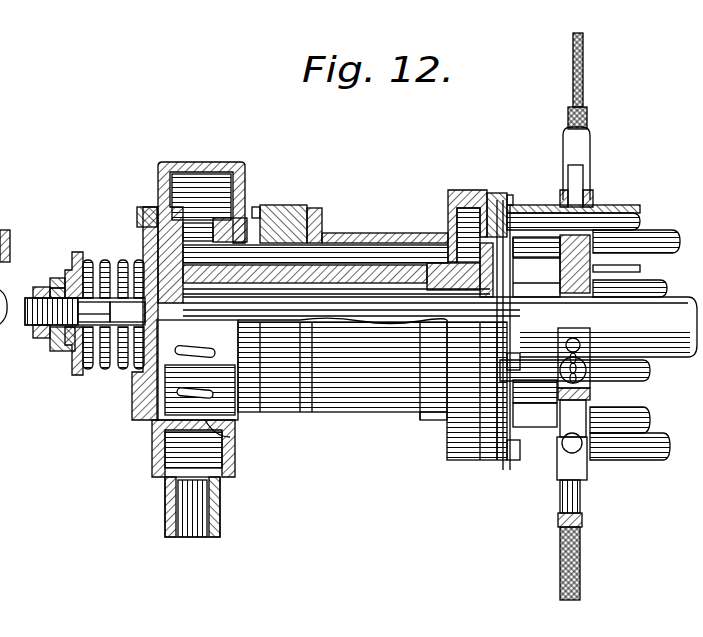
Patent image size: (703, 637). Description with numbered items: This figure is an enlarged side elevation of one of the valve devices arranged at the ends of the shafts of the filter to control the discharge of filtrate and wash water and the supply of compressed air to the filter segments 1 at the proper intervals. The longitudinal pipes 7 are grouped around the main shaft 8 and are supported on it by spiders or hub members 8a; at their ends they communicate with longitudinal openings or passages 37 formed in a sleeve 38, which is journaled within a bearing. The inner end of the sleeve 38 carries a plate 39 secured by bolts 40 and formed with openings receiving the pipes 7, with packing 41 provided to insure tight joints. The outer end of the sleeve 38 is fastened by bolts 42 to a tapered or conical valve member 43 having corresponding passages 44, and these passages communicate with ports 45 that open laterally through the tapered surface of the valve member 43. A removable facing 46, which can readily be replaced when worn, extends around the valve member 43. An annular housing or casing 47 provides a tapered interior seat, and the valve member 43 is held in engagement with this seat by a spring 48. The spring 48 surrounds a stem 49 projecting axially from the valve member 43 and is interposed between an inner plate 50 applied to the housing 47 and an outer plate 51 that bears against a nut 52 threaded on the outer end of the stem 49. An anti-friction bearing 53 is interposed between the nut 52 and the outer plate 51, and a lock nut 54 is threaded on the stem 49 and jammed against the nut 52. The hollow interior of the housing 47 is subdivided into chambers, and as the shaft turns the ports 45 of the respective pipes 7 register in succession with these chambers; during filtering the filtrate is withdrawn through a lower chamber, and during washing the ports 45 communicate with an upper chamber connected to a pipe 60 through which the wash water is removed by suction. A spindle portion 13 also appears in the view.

The segment 1 is at (573, 78).
The longitudinal pipe 7 is at (604, 206).
The main shaft 8 is at (440, 327).
The spider or hub member 8a is at (598, 269).
The spindle 13 is at (205, 166).
The longitudinal opening or passage 37 is at (355, 236).
The sleeve 38 is at (392, 236).
The plate 39 is at (502, 462).
The bolt 40 is at (527, 462).
The packing 41 is at (490, 193).
The bolt 42 is at (263, 205).
The tapered or conical valve member 43 is at (236, 442).
The passage 44 is at (305, 223).
The port 45 is at (187, 392).
The removable facing 46 is at (207, 226).
The annular housing or casing 47 is at (160, 168).
The spring 48 is at (105, 259).
The stem 49 is at (82, 376).
The inner plate 50 is at (142, 208).
The outer plate 51 is at (78, 257).
The nut 52 is at (57, 280).
The anti-friction bearing 53 is at (62, 352).
The lock nut 54 is at (33, 338).
The pipe 60 is at (2, 227).